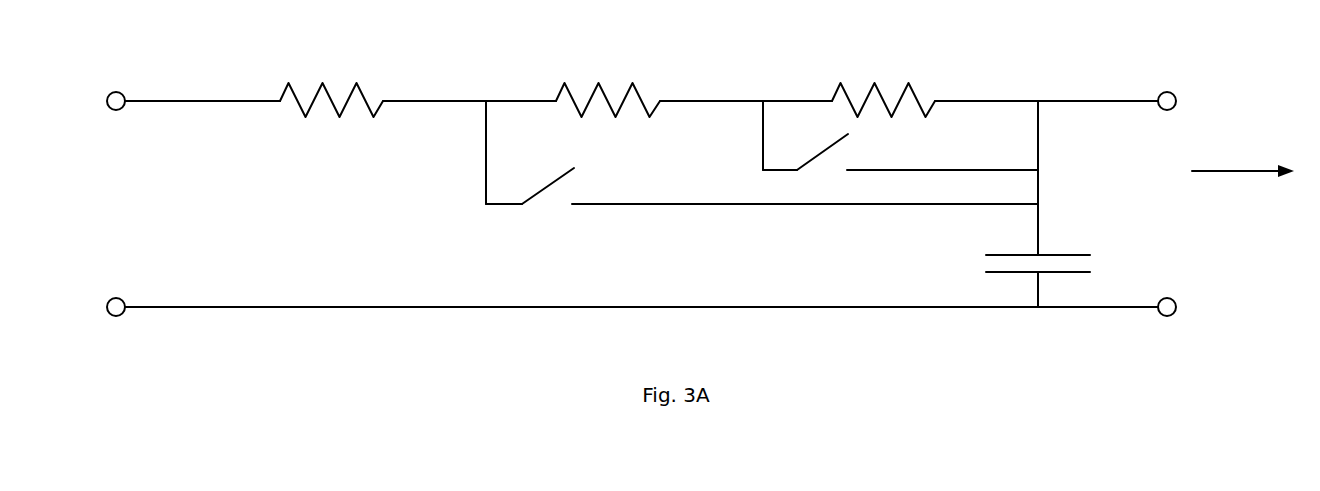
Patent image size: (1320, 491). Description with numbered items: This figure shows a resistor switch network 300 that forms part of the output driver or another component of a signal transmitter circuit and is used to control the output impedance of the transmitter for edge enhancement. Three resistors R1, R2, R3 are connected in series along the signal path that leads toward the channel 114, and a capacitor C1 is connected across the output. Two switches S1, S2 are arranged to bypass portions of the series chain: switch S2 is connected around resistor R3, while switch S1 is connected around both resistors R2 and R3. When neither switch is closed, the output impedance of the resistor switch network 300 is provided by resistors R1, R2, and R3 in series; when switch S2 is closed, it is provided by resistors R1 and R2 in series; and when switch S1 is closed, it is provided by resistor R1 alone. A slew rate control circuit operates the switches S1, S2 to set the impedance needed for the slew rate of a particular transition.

The resistor switch network 300 is at (1078, 24).
The channel 114 is at (1243, 211).
The resistor R1 is at (331, 77).
The resistor R2 is at (608, 77).
The resistor R3 is at (883, 77).
The switch S1 is at (762, 200).
The switch S2 is at (900, 166).
The capacitor C1 is at (1065, 264).